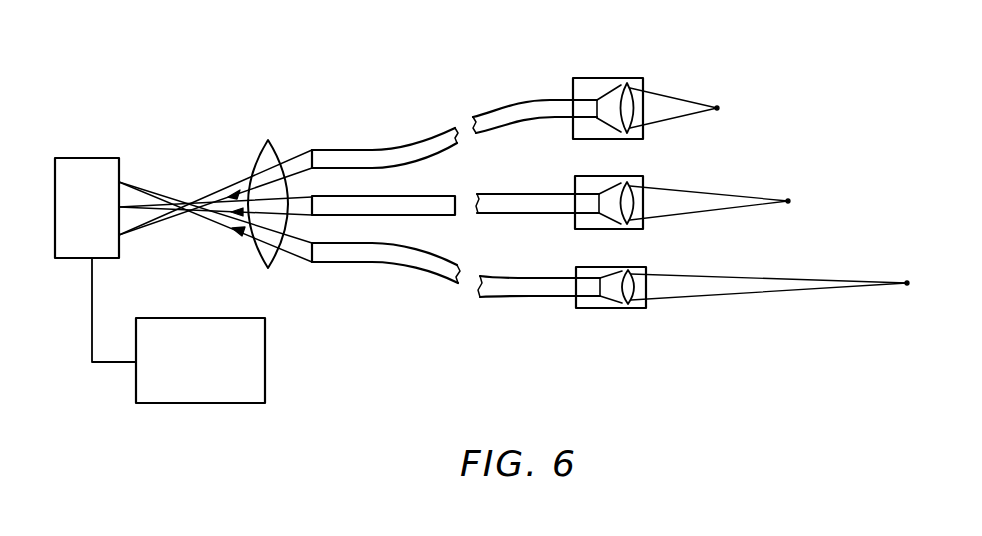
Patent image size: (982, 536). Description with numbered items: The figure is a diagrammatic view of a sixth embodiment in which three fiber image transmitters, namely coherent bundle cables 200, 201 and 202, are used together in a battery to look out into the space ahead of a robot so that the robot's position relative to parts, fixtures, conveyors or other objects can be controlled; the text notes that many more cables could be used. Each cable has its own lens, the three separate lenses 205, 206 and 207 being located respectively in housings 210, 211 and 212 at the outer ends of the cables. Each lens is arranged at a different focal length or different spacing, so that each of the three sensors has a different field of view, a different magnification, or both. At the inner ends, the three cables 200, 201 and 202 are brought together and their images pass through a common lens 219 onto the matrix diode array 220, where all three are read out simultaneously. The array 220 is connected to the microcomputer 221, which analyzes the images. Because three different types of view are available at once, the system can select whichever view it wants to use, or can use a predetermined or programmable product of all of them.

The coherent bundle cable 200 is at (530, 105).
The coherent bundle cable 201 is at (498, 194).
The coherent bundle cable 202 is at (520, 296).
The lens 205 is at (633, 106).
The lens 206 is at (632, 200).
The lens 207 is at (636, 280).
The housing 210 is at (618, 78).
The housing 211 is at (628, 176).
The housing 212 is at (637, 308).
The collimating lens 219 is at (267, 140).
The matrix diode array 220 is at (107, 222).
The microcomputer 221 is at (208, 394).